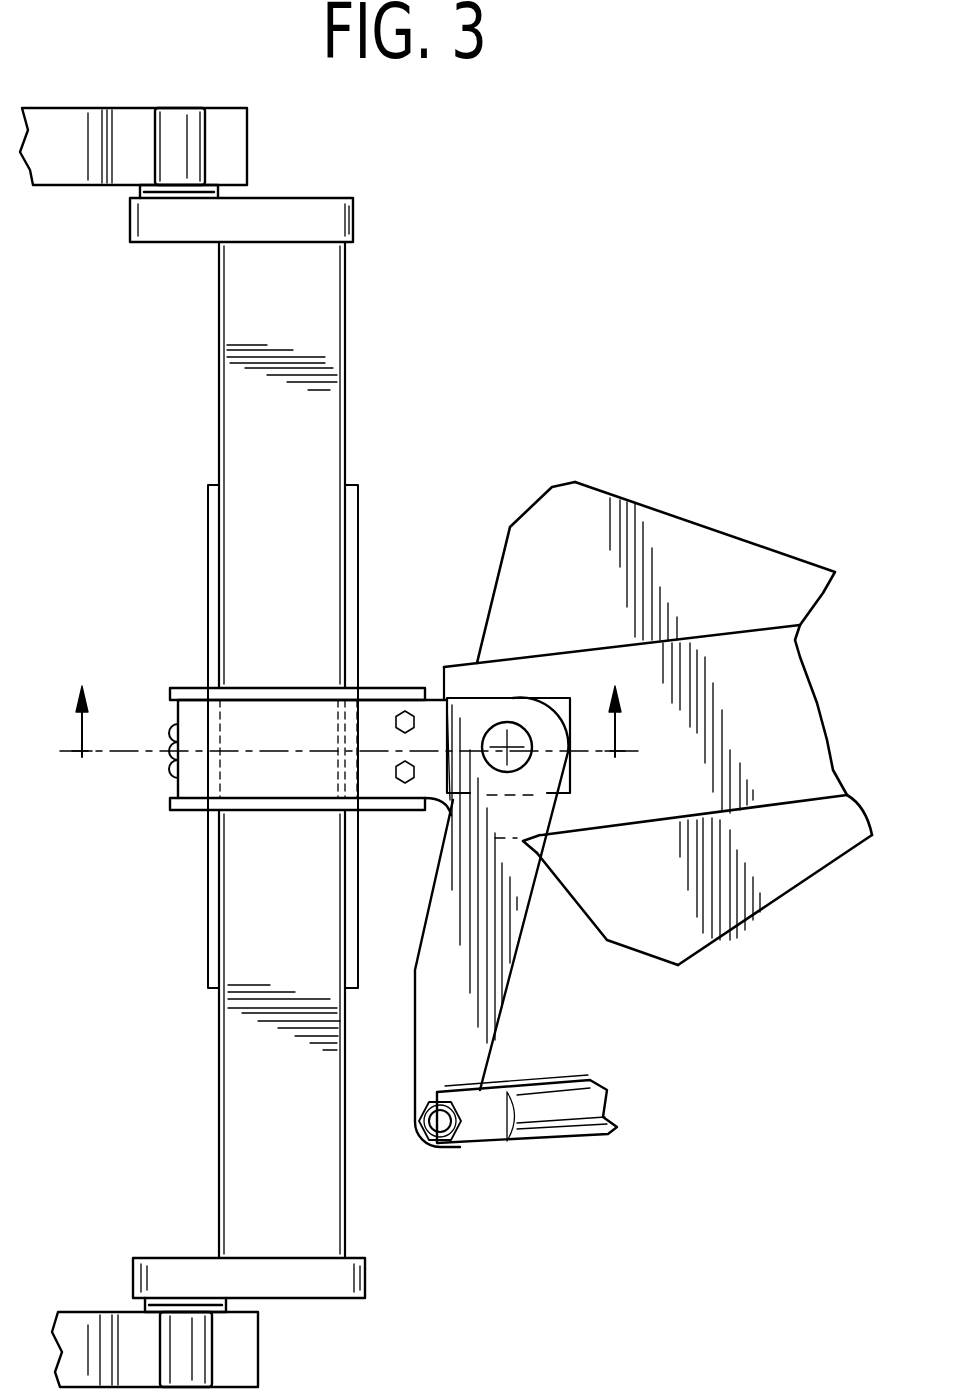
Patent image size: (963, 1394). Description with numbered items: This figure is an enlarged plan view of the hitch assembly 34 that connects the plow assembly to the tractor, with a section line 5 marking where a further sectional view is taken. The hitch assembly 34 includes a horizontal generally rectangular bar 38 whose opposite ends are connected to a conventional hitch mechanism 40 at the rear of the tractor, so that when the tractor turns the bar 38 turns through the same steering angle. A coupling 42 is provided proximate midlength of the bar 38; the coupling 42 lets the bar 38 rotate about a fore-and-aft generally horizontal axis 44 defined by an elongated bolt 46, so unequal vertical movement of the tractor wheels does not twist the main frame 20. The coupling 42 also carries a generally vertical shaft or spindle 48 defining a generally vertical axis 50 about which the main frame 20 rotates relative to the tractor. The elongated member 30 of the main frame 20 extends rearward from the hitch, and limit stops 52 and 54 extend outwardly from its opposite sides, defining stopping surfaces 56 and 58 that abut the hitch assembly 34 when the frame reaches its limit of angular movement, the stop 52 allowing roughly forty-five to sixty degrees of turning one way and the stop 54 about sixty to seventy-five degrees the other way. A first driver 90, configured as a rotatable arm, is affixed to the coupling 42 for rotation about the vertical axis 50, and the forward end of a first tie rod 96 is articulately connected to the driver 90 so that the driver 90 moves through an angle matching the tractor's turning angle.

The main frame 20 is at (836, 876).
The elongated member 30 is at (803, 720).
The hitch assembly 34 is at (406, 374).
The horizontal generally rectangular bar 38 is at (246, 445).
The hitch mechanism 40 is at (262, 156).
The coupling 42 is at (375, 682).
The fore-and-aft generally horizontal axis 44 is at (263, 752).
The elongated bolt 46 is at (170, 779).
The vertical shaft or spindle 48 is at (507, 745).
The generally vertical axis 50 is at (511, 742).
The limit stop 52 is at (733, 517).
The limit stop 54 is at (745, 934).
The stopping surface 56 is at (522, 510).
The stopping surface 58 is at (636, 951).
The first driver 90 is at (462, 1057).
The first tie rod 96 is at (558, 1114).
The section line 5- 5 is at (347, 734).